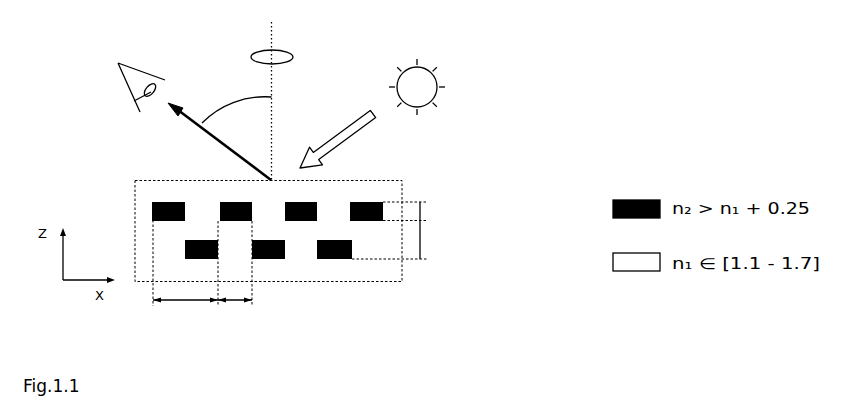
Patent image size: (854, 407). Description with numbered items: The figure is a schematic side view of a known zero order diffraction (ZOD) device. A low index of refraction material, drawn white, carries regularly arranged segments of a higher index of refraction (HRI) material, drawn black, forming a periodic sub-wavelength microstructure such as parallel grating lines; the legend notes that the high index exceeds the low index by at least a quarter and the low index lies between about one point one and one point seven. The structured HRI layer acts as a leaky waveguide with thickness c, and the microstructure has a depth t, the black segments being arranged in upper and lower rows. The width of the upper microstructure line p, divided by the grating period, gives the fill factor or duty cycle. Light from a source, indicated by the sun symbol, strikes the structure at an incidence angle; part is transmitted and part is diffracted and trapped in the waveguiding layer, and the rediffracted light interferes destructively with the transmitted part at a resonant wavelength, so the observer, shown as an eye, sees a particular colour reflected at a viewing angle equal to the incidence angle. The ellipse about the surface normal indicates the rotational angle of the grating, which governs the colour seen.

The thickness of the HRI layer c is at (417, 202).
The microstructure depth t is at (417, 259).
The width of the upper microstructure line p is at (235, 317).